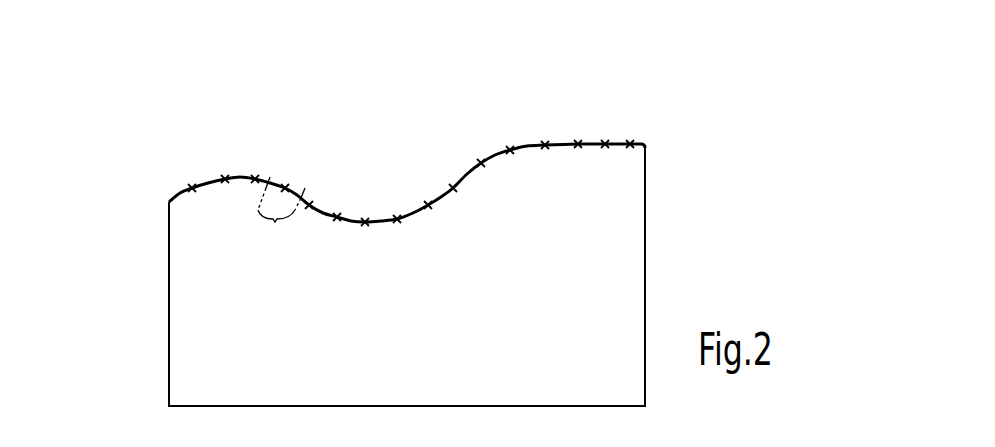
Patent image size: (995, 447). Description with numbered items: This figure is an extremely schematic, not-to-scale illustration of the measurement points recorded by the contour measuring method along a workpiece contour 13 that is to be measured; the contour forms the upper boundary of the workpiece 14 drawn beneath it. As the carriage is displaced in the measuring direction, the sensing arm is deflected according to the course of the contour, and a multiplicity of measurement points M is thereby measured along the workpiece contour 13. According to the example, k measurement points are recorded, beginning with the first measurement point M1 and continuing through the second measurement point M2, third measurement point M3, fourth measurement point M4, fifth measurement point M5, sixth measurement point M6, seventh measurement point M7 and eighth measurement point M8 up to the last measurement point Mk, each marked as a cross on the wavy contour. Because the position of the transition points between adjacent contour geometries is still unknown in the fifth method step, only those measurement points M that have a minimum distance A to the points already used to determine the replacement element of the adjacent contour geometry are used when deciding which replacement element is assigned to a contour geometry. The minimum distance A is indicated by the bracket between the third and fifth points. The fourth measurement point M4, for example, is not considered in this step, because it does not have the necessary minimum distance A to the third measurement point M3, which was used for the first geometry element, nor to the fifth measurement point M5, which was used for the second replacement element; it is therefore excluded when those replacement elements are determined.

The workpiece contour 13 is at (537, 115).
The workpiece body 14 is at (211, 308).
The first measurement point M1 is at (192, 188).
The second measurement point M2 is at (225, 179).
The third measurement point M3 is at (255, 179).
The fourth measurement point M4 is at (285, 188).
The fifth measurement point M5 is at (309, 205).
The sixth measurement point M6 is at (337, 217).
The seventh measurement point M7 is at (365, 222).
The eighth measurement point M8 is at (397, 219).
The k-th measurement point Mk is at (630, 142).
The minimum distance A is at (281, 212).
The measurement points M is at (382, 240).